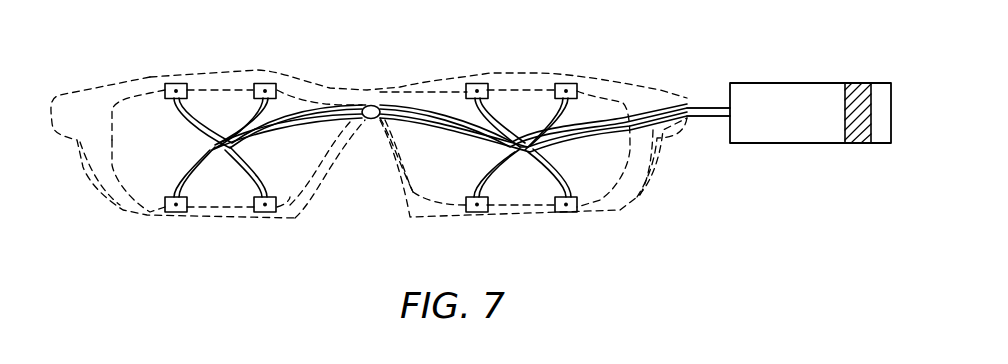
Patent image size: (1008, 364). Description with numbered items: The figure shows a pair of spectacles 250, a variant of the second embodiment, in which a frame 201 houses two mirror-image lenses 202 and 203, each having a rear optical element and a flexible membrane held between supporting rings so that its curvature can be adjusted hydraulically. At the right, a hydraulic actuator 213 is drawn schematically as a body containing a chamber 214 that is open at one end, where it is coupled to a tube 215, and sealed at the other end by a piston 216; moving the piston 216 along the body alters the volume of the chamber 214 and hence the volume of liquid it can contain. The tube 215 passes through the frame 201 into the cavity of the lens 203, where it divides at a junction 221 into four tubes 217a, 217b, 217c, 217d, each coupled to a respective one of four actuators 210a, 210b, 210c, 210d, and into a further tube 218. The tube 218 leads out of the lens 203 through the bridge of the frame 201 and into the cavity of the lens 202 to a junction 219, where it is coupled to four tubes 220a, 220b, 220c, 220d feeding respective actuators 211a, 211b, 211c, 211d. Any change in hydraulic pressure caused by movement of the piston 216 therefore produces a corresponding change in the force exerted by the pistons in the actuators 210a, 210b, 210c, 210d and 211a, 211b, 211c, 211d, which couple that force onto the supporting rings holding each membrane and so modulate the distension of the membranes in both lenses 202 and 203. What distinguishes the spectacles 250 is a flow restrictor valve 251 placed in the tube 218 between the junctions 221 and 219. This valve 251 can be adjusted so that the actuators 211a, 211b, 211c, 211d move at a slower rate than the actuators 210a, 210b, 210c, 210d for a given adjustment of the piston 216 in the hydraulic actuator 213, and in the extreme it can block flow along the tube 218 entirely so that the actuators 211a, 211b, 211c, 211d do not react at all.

The frame 201 is at (77, 86).
The lens 202 is at (313, 180).
The lens 203 is at (636, 202).
The actuator 210a is at (477, 83).
The actuator 210b is at (565, 83).
The actuator 210c is at (566, 212).
The actuator 210d is at (476, 212).
The actuator 211a is at (176, 83).
The actuator 211b is at (265, 83).
The actuator 211c is at (263, 212).
The actuator 211d is at (176, 212).
The hydraulic actuator 213 is at (785, 83).
The chamber 214 is at (782, 143).
The tube 215 is at (703, 105).
The piston 216 is at (855, 143).
The tube 217a is at (465, 92).
The tube 217b is at (585, 92).
The tube 217c is at (585, 210).
The tube 217d is at (455, 208).
The tube 218 is at (470, 143).
The junction 219 is at (215, 146).
The tube 220a is at (150, 80).
The tube 220b is at (290, 97).
The tube 220c is at (285, 212).
The tube 220d is at (150, 215).
The junction 221 is at (523, 140).
The pair of spectacles 250 is at (110, 258).
The flow restrictor valve 251 is at (370, 105).